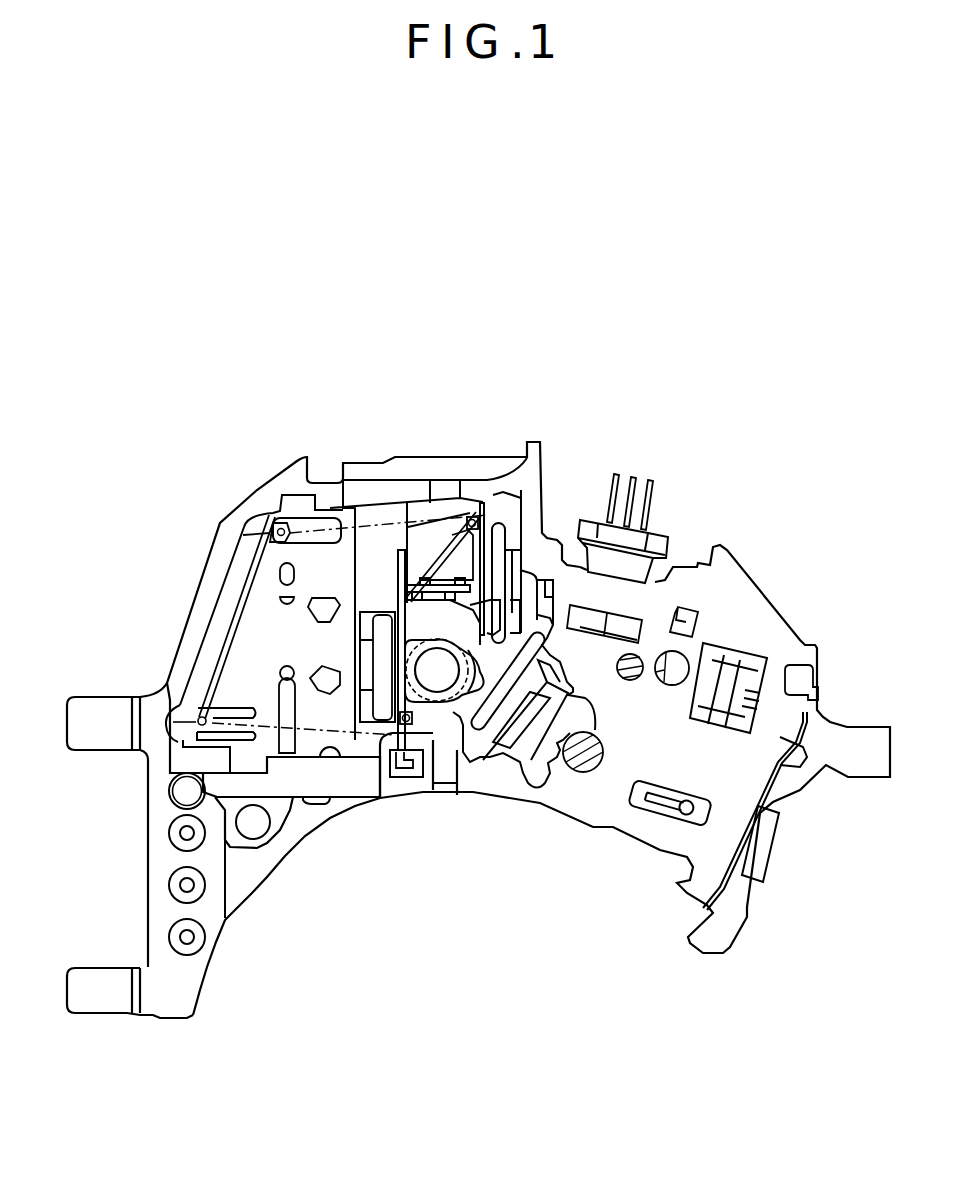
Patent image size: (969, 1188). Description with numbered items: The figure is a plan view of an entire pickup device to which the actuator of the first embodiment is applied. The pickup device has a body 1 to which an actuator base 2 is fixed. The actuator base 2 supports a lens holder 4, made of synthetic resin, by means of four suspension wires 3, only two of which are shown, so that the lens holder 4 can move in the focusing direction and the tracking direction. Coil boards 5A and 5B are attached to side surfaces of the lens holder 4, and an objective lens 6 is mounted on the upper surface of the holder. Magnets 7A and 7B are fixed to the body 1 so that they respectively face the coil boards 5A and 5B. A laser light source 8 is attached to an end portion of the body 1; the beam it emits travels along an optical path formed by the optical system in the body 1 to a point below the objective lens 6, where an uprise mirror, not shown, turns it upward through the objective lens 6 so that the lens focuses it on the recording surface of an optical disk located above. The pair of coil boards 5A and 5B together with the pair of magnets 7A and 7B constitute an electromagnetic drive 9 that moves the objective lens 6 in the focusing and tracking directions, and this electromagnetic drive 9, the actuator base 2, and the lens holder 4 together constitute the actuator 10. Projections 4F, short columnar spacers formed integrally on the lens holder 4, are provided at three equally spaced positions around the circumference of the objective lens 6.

The body 1 is at (739, 588).
The actuator base 2 is at (273, 608).
The suspension wires 3 is at (375, 520).
The lens holder 4 is at (497, 540).
The projections 4F is at (405, 623).
The coil board 5A is at (403, 720).
The coil board 5B is at (495, 518).
The objective lens 6 is at (475, 700).
The magnet 7A is at (393, 624).
The magnet 7B is at (543, 540).
The laser light source 8 is at (768, 842).
The electromagnetic drive 9 is at (673, 380).
The actuator 10 is at (749, 314).